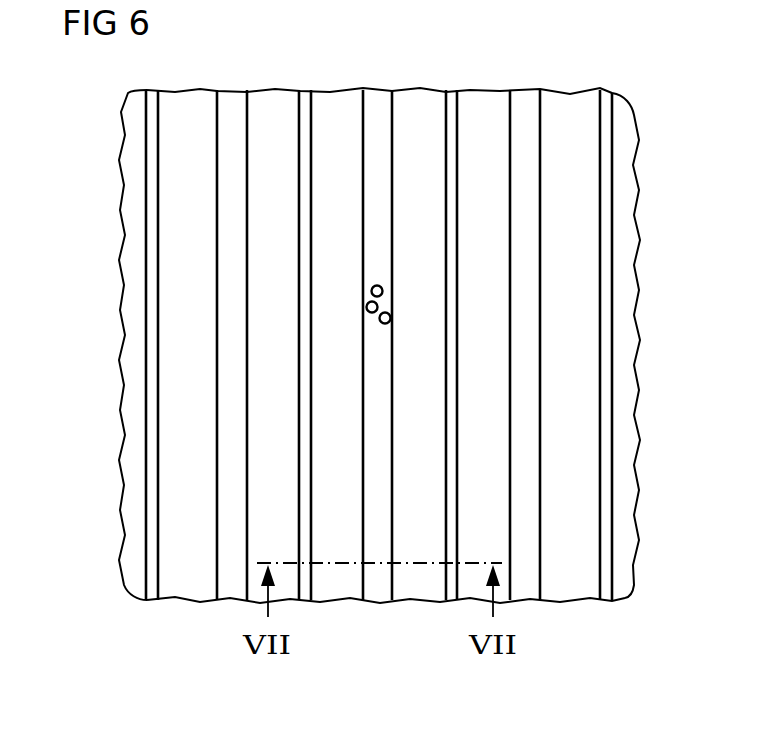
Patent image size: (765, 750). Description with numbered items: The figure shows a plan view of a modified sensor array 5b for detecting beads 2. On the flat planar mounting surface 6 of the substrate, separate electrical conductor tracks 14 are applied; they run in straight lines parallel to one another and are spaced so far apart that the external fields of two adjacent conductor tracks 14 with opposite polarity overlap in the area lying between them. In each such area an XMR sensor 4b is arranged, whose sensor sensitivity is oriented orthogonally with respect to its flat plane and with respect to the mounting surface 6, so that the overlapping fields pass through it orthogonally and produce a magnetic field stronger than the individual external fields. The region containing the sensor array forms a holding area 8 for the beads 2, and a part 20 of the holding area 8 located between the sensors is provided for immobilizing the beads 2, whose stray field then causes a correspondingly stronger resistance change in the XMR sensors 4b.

The beads 2 is at (384, 289).
The XMR sensors 4b is at (232, 99).
The sensor array 5b is at (623, 380).
The mounting surface 6 is at (502, 461).
The holding area 8 is at (556, 312).
The electrical conductor tracks 14 is at (153, 550).
The part of the holding area 20 is at (341, 99).